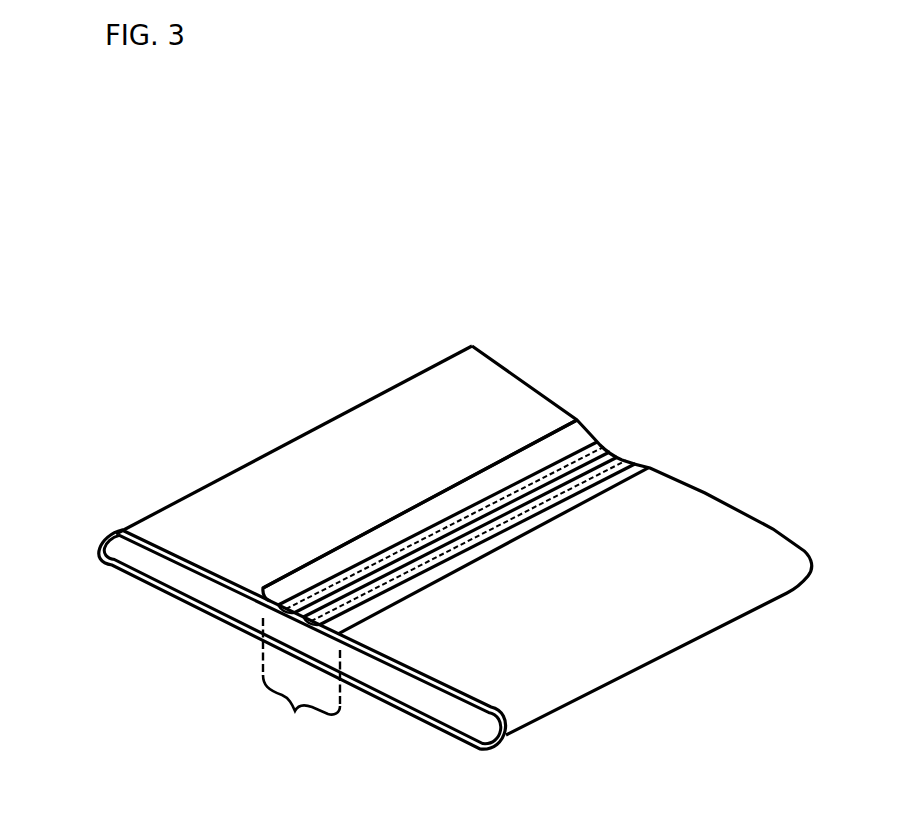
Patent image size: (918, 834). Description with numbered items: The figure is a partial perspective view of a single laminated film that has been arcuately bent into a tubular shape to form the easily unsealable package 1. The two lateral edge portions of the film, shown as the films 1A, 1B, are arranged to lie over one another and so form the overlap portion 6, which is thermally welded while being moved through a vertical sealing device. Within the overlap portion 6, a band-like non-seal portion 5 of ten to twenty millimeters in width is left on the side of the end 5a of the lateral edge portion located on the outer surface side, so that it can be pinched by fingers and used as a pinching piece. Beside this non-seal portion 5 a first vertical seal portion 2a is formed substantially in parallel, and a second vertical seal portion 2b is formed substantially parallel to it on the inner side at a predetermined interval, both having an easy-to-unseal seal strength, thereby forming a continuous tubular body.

The package 1 is at (445, 340).
The film 1A is at (137, 587).
The film 1B is at (150, 543).
The first vertical seal portion 2a is at (582, 448).
The second vertical seal portion 2b is at (612, 478).
The band-like non-seal portion 5 is at (387, 543).
The end 5a is at (347, 543).
The overlap portion 6 is at (301, 684).